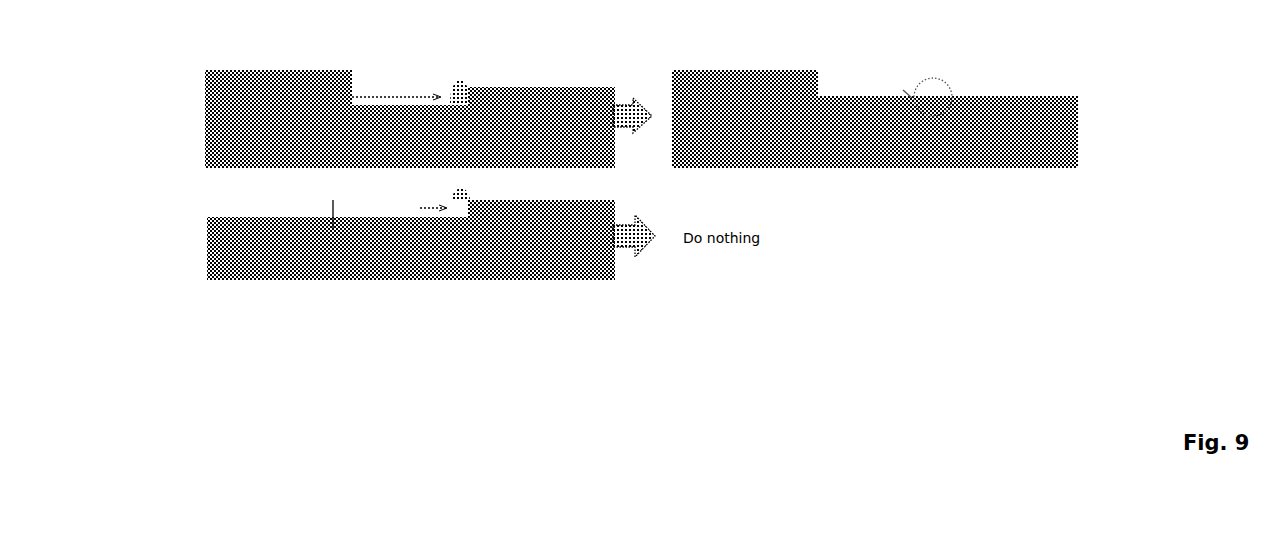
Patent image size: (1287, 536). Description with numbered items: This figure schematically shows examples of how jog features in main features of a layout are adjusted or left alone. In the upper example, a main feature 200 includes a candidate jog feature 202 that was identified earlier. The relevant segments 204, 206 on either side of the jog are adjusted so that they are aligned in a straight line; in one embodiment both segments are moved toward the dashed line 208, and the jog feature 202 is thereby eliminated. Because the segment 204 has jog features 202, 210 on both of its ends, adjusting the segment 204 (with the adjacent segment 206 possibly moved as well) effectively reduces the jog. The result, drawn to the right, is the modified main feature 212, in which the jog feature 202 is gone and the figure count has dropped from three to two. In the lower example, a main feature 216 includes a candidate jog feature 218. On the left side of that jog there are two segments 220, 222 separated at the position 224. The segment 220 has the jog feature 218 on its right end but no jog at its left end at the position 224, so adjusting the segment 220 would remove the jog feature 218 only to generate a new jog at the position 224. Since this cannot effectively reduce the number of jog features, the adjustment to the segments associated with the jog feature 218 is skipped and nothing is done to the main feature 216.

The main feature 200 is at (156, 123).
The candidate jog feature 202 is at (458, 73).
The segment 204 is at (418, 109).
The segment 206 is at (544, 86).
The dashed line 208 is at (583, 98).
The jog feature 210 is at (345, 100).
The modified main feature 212 is at (1090, 127).
The main feature 216 is at (168, 237).
The candidate jog feature 218 is at (470, 215).
The segment 220 is at (396, 218).
The segment 222 is at (265, 217).
The position 224 is at (333, 214).